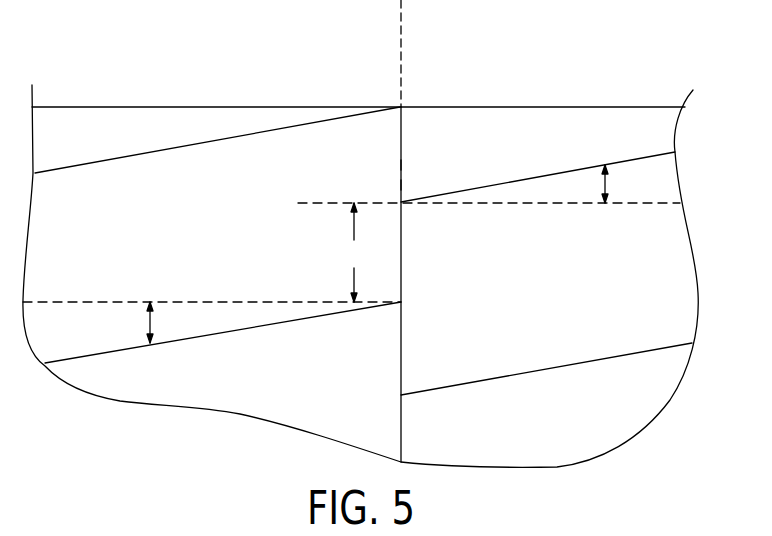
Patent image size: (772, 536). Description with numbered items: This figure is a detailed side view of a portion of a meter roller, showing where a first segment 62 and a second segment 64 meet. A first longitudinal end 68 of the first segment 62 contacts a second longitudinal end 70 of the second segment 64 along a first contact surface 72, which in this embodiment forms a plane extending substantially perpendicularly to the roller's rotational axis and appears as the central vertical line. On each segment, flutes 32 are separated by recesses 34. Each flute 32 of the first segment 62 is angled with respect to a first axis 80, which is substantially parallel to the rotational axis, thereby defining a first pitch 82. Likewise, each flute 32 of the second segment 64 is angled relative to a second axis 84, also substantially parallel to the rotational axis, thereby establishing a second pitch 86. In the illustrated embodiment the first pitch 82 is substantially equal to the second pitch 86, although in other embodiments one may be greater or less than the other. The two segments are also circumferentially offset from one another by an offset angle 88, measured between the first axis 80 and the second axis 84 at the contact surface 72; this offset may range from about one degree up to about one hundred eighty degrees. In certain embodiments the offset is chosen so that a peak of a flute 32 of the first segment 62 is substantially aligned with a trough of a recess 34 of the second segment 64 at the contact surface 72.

The flute 32 is at (155, 152).
The recess 34 is at (115, 186).
The first segment 62 is at (217, 107).
The second segment 64 is at (490, 107).
The first longitudinal end 68 is at (400, 165).
The second longitudinal end 70 is at (404, 185).
The first contact surface 72 is at (403, 44).
The first axis 80 is at (78, 302).
The first pitch 82 is at (148, 327).
The second axis 84 is at (518, 203).
The second pitch 86 is at (607, 184).
The offset angle 88 is at (355, 252).